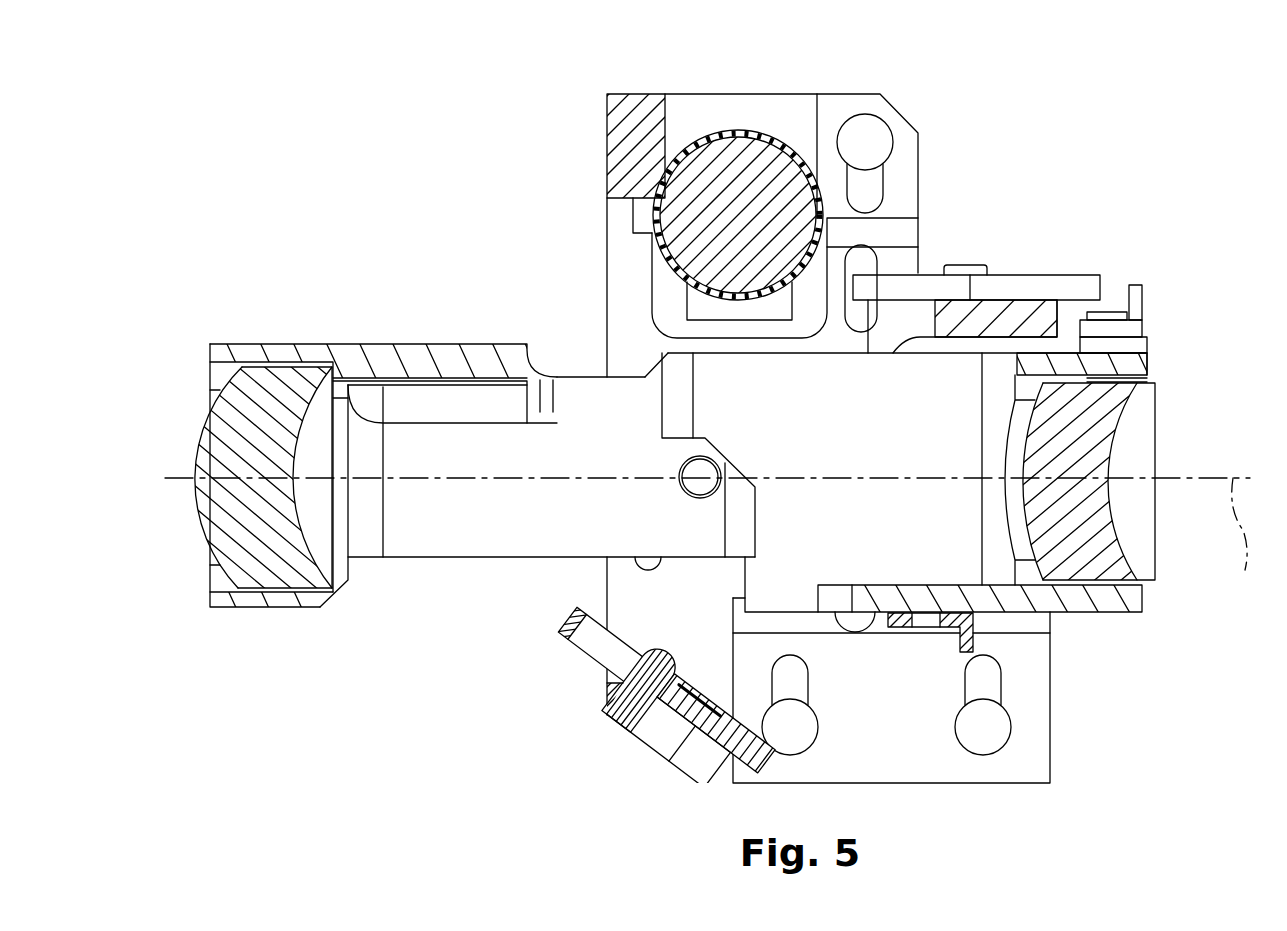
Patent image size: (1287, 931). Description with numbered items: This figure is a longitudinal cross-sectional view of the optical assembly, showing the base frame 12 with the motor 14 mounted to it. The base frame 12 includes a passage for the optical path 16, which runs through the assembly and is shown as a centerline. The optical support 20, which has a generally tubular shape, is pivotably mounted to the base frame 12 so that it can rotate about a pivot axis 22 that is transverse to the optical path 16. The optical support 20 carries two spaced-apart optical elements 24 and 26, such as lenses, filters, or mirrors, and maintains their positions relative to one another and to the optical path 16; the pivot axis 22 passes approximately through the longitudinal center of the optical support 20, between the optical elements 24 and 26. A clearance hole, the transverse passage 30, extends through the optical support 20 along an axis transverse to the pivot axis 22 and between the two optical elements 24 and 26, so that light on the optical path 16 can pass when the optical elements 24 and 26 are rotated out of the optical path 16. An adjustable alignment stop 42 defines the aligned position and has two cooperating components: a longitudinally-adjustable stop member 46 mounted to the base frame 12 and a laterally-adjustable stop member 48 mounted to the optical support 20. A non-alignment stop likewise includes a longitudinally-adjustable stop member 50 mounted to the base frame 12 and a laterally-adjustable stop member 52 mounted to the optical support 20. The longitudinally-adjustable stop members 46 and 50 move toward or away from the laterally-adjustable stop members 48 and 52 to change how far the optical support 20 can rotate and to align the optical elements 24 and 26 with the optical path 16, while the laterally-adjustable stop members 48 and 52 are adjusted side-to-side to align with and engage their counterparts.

The base frame 12 is at (844, 107).
The motor 14 is at (717, 133).
The optical path 16 is at (1243, 537).
The optical support 20 is at (411, 357).
The pivot axis 22 is at (697, 483).
The optical element 24 is at (1118, 403).
The optical element 26 is at (217, 420).
The transverse passage 30 is at (442, 636).
The alignment stop 42 is at (1158, 202).
The longitudinally-adjustable stop member 46 is at (1055, 290).
The laterally-adjustable stop member 48 is at (1137, 287).
The longitudinally-adjustable stop member 50 is at (715, 740).
The laterally-adjustable stop member 52 is at (962, 640).